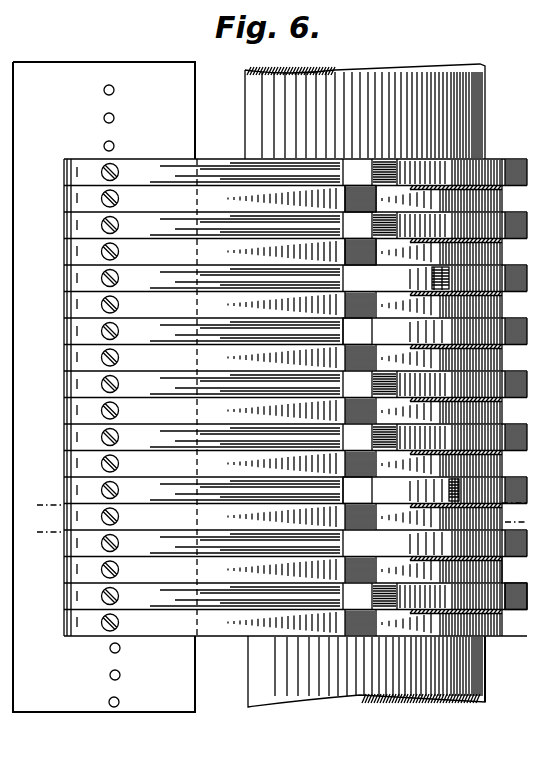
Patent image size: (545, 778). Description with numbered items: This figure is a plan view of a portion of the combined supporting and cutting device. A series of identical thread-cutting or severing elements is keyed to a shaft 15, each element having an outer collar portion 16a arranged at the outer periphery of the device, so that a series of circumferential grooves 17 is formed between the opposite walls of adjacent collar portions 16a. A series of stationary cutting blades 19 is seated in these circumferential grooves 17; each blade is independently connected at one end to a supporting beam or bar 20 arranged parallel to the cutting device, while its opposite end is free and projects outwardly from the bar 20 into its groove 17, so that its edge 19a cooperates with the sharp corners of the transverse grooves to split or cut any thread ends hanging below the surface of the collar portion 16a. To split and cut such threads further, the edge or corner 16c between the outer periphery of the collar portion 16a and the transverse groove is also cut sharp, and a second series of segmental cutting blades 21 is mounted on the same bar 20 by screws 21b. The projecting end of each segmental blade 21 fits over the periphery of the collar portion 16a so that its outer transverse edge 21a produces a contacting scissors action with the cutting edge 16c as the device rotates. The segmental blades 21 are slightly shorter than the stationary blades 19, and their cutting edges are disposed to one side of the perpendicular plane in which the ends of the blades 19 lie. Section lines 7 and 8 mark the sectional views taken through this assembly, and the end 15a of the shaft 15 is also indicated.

The section line 7- 7 is at (283, 538).
The section line 8- 8 is at (282, 503).
The shaft 15 is at (367, 685).
The roller end face 15a is at (485, 672).
The outer collar portion 16a is at (527, 608).
The edge or corner 16c is at (405, 532).
The circumferential groove 17 is at (516, 568).
The stationary cutting blade 19 is at (162, 303).
The edge of stationary cutting blade 19a is at (389, 253).
The supporting beam or bar 20 is at (105, 387).
The segmental cutting blade 21 is at (80, 334).
The outer transverse edge 21a is at (351, 334).
The screw 21b is at (120, 436).